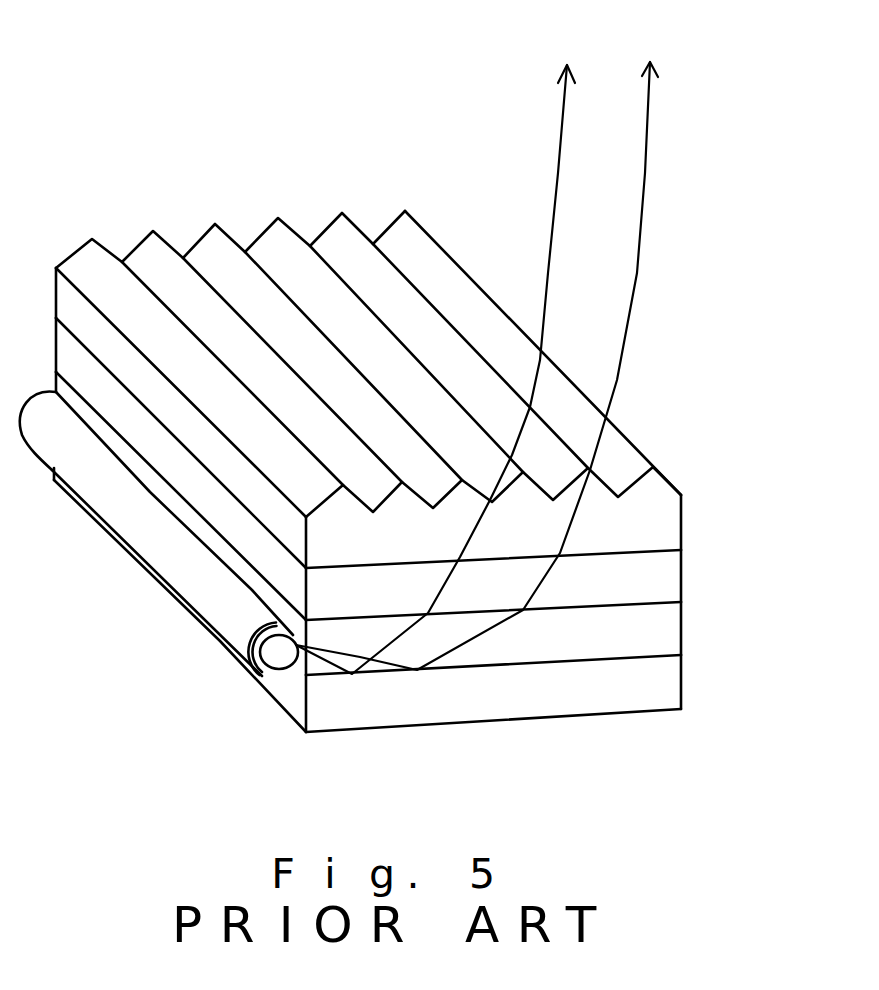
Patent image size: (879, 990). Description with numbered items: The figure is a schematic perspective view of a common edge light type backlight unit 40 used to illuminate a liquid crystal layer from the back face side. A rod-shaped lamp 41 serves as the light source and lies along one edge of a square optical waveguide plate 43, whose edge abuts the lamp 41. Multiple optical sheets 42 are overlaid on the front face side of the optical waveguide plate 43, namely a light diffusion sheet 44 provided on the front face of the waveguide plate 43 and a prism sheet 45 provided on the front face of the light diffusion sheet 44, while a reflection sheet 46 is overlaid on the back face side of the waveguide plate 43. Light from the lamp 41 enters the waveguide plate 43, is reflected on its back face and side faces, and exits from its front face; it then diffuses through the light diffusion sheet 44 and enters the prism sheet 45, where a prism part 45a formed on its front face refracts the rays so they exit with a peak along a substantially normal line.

The backlight unit 40 is at (430, 397).
The rod-shaped lamp 41 is at (279, 653).
The optical sheets 42 is at (448, 415).
The optical waveguide plate 43 is at (660, 633).
The light diffusion sheet 44 is at (660, 582).
The prism sheet 45 is at (419, 389).
The prism part 45a is at (613, 448).
The reflection sheet 46 is at (660, 687).